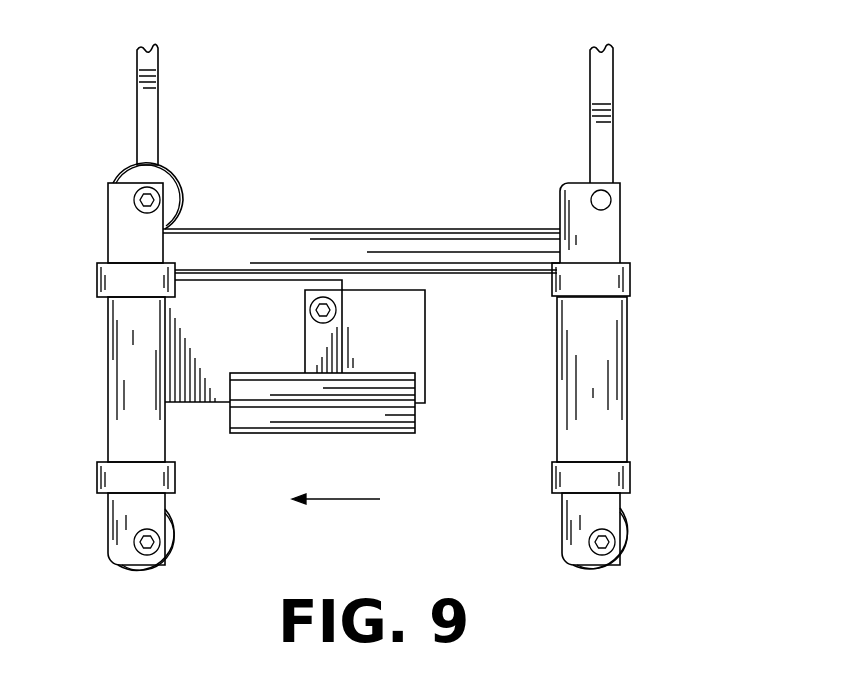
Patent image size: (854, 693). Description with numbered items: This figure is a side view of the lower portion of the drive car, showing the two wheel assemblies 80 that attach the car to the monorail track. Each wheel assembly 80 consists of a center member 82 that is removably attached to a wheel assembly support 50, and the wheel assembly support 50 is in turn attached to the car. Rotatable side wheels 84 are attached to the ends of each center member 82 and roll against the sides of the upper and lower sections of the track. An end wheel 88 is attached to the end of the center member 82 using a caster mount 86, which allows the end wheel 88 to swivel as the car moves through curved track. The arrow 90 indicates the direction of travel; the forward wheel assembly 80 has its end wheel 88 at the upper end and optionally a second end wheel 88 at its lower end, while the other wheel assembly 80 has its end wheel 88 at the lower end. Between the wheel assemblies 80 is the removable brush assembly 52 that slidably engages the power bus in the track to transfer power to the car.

The wheel assembly support 50 is at (137, 118).
The brush assembly 52 is at (401, 418).
The wheel assembly 80 is at (88, 378).
The center member 82 is at (613, 364).
The side wheels 84 is at (630, 280).
The caster mount 86 is at (569, 513).
The end wheel 88 is at (634, 520).
The arrow 90 is at (343, 500).